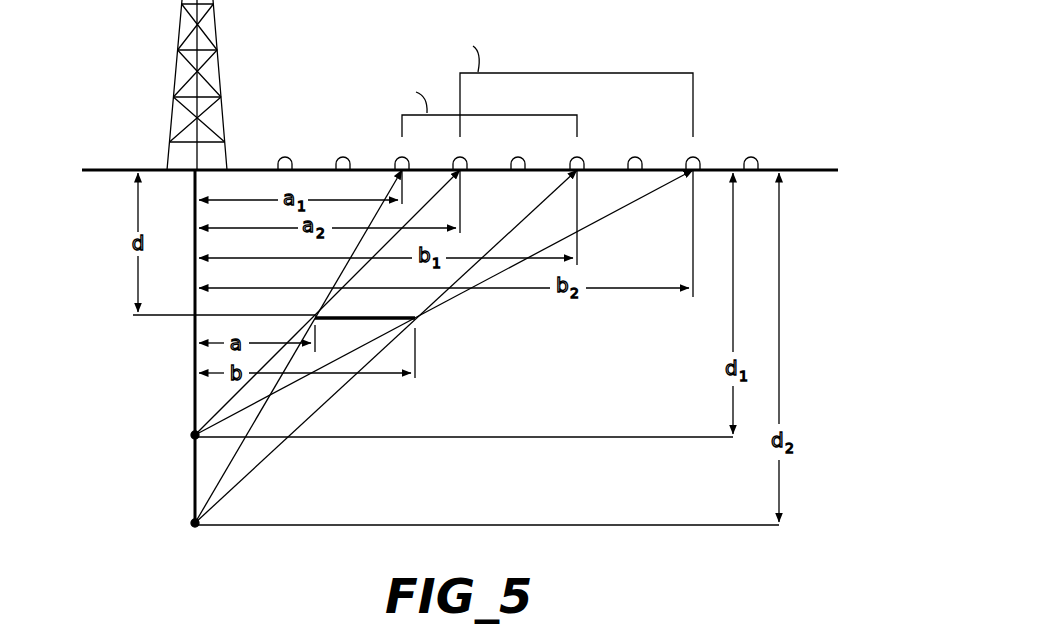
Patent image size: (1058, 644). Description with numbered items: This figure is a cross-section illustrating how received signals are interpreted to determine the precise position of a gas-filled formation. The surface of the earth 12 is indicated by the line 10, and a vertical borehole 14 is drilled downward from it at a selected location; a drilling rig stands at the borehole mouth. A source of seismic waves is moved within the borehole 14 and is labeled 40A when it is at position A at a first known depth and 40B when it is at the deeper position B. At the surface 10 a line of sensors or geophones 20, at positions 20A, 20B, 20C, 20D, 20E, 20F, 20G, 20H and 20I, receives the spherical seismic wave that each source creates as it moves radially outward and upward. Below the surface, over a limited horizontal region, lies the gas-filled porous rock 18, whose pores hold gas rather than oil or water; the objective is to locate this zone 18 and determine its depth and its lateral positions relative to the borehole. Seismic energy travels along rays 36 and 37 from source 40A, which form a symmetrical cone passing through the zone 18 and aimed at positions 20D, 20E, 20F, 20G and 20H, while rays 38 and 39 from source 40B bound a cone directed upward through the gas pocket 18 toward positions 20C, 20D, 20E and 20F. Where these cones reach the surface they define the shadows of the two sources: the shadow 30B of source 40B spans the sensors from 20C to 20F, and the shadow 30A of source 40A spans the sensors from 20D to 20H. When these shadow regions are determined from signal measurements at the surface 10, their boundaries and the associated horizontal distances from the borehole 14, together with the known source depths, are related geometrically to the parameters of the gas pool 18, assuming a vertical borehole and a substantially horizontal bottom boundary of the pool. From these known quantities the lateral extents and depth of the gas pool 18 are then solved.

The surface of the earth 10 is at (104, 168).
The earth 12 is at (586, 386).
The vertical borehole 14 is at (192, 356).
The gas-filled porous rock 18 is at (382, 320).
The geophones 20 is at (797, 163).
The geophone 20A is at (290, 158).
The geophone 20B is at (348, 158).
The geophone 20C is at (407, 158).
The geophone 20D is at (465, 158).
The geophone 20E is at (523, 158).
The geophone 20F is at (582, 158).
The geophone 20G is at (640, 158).
The geophone 20H is at (698, 158).
The geophone 20I is at (756, 158).
The shadow region 30A is at (621, 73).
The shadow region 30B is at (518, 114).
The ray 36 is at (333, 297).
The ray 37 is at (606, 216).
The ray 38 is at (338, 278).
The ray 39 is at (514, 228).
The source of seismic waves 40A is at (186, 443).
The source of seismic waves 40B is at (192, 533).